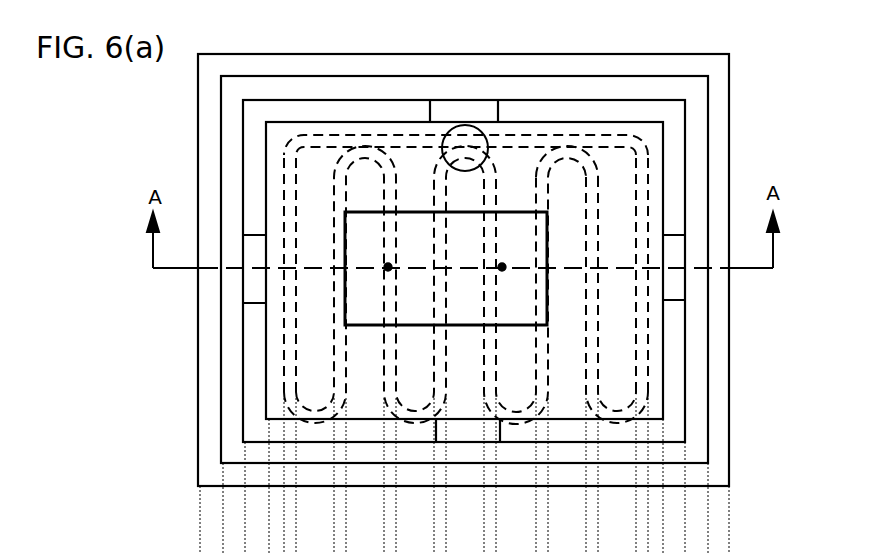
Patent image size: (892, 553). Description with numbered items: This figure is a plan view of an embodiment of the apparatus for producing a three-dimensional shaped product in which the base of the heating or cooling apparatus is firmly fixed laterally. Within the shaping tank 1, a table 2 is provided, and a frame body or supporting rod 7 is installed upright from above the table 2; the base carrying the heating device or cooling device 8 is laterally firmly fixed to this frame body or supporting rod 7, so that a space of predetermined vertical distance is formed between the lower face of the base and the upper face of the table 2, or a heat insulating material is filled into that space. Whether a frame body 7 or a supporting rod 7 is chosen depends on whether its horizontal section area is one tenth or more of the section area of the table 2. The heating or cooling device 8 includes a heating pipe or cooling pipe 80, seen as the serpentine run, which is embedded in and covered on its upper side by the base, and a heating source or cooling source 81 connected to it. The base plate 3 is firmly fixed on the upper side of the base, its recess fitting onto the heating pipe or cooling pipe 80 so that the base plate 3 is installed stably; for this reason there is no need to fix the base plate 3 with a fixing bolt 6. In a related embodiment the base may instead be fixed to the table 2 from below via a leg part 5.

The shaping tank 1 is at (708, 158).
The table 2 is at (686, 205).
The base plate 3 is at (417, 195).
The leg part 5 is at (278, 130).
The fixing bolt 6 is at (388, 265).
The frame body or supporting rod 7 is at (456, 112).
The heating device or cooling device 8 is at (568, 170).
The heating pipe or cooling pipe 80 is at (292, 192).
The heating source or cooling source 81 is at (462, 143).